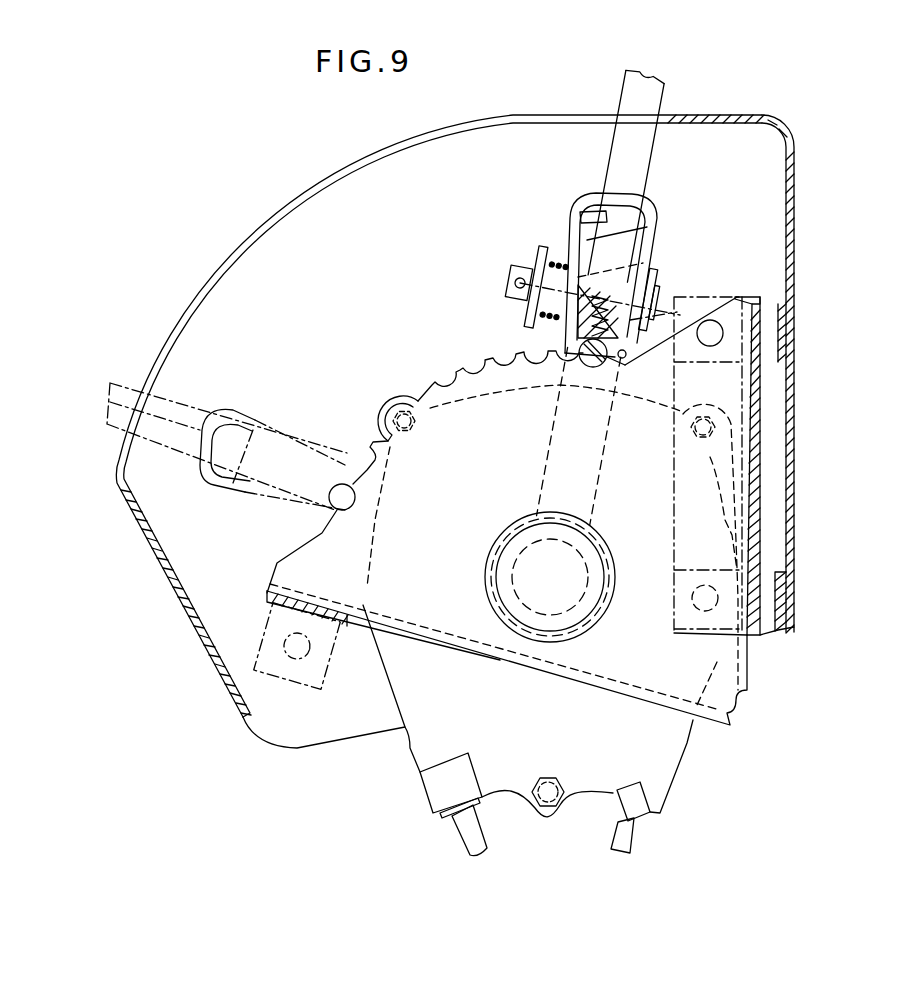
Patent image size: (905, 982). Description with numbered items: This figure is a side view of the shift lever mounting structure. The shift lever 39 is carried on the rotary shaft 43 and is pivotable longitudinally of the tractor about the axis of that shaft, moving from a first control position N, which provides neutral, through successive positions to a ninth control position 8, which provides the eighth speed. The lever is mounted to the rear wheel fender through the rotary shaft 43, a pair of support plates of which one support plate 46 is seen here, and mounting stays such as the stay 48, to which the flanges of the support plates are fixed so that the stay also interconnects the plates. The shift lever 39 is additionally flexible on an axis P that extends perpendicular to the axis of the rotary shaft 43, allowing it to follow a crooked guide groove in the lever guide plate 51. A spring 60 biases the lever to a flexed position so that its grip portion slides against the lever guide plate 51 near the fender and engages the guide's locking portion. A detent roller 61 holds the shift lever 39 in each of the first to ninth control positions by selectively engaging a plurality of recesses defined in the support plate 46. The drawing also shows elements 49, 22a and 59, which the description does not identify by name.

The lever guide plate 51 is at (735, 115).
The shift lever 39 is at (646, 157).
The spring 60 is at (548, 258).
The detent roller 61 is at (590, 360).
The mounting bracket 49 is at (757, 300).
The cam plate 22a is at (600, 463).
The rotary shaft 43 is at (522, 574).
The support plate 46 is at (373, 441).
The stay 48 is at (268, 595).
The motor housing 59 is at (405, 692).
The axis P is at (520, 283).
The first control position N is at (645, 72).
The ninth control position 8 is at (110, 402).